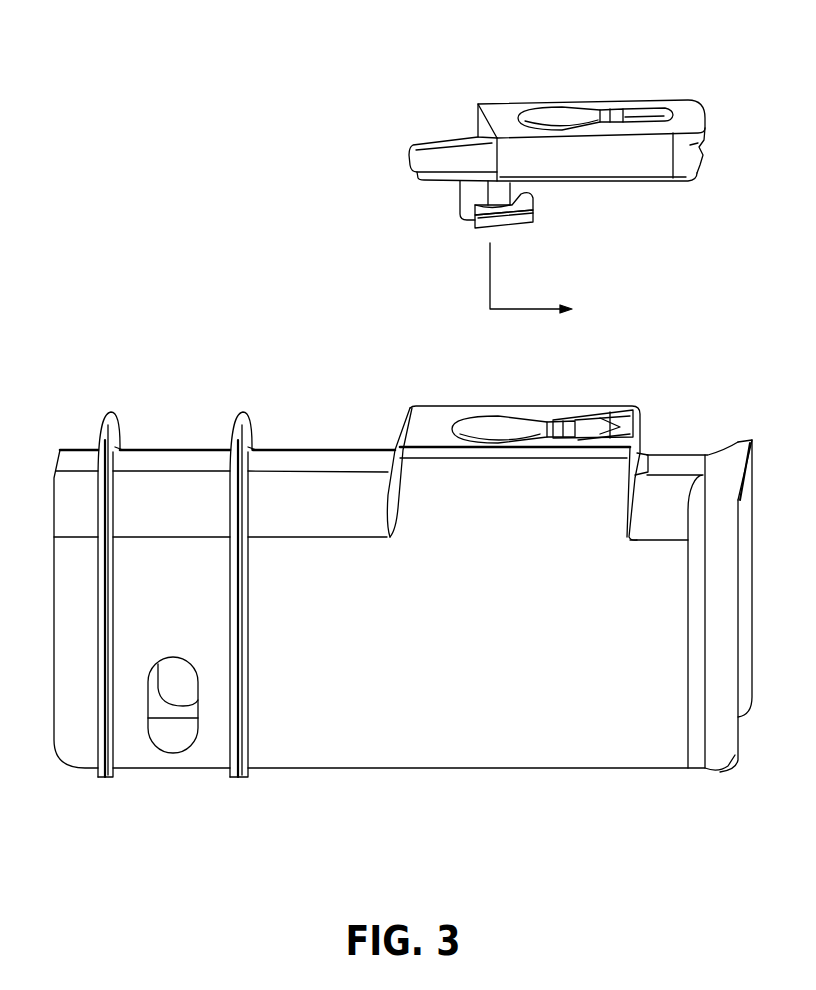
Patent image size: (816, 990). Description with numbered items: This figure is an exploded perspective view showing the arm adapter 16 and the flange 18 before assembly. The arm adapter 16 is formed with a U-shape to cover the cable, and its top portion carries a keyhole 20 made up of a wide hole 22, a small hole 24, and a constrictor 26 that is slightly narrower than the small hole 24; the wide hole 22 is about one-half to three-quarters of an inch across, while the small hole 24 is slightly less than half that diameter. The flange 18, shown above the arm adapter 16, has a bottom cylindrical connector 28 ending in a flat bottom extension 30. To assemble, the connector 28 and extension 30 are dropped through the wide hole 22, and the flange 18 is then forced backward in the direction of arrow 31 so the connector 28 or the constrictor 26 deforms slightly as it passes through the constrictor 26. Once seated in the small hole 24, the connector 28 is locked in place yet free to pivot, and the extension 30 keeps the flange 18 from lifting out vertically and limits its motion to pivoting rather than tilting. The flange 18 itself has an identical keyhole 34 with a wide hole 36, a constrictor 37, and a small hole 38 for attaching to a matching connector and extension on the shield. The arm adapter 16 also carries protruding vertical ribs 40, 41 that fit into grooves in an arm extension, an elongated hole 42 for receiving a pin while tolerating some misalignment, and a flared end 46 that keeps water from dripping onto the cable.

The arm adapter 16 is at (348, 400).
The flange 18 is at (692, 165).
The keyhole 20 is at (450, 367).
The wide hole 22 is at (493, 435).
The small hole 24 is at (588, 418).
The constrictor 26 is at (548, 422).
The cylindrical connector 28 is at (468, 200).
The flat bottom extension 30 is at (532, 217).
The arrow 31 is at (522, 308).
The keyhole 34 is at (503, 71).
The wide hole 36 is at (563, 125).
The constrictor 37 is at (620, 110).
The small hole 38 is at (657, 107).
The vertical rib 40 is at (115, 412).
The vertical rib 41 is at (245, 412).
The hole 42 is at (192, 745).
The flared end 46 is at (737, 448).